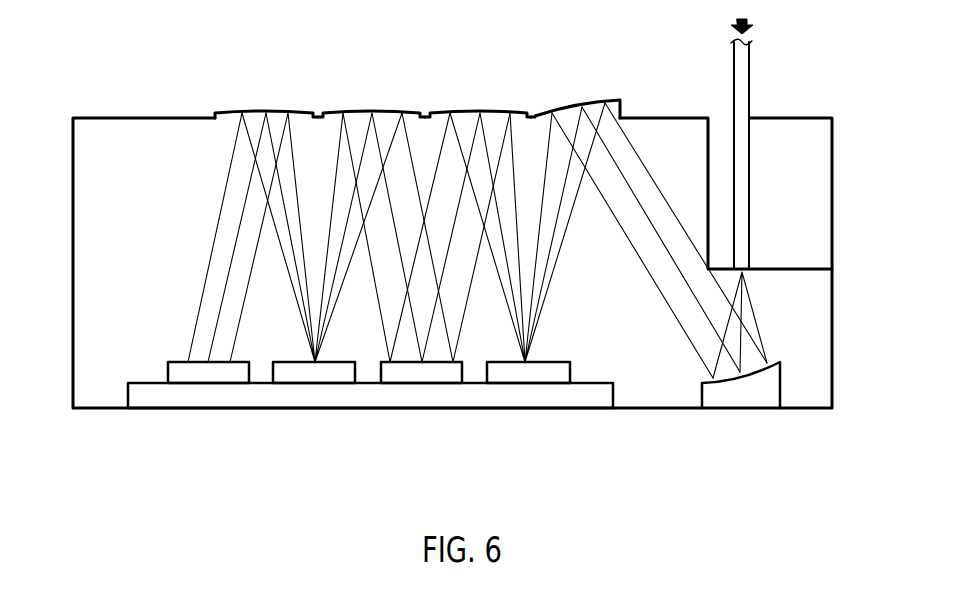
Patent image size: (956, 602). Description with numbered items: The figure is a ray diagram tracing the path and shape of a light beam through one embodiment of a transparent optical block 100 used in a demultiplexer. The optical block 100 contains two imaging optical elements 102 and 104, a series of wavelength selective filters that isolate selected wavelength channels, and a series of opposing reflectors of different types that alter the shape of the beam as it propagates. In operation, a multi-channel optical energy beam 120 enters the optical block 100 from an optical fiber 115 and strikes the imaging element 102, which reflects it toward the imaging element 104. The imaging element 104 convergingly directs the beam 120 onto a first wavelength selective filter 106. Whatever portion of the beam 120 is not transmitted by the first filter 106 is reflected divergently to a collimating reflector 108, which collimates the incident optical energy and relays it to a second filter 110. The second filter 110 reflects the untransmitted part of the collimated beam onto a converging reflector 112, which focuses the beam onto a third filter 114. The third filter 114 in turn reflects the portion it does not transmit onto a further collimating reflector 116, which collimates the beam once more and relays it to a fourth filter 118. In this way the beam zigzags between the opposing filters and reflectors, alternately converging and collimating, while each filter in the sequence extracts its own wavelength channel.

The transparent optical block 100 is at (102, 134).
The imaging optical element 102 is at (743, 397).
The imaging optical element 104 is at (604, 103).
The first wavelength selective filter 106 is at (537, 385).
The collimating reflector 108 is at (480, 112).
The second filter 110 is at (427, 385).
The converging reflector 112 is at (378, 113).
The third filter 114 is at (317, 385).
The optical fiber 115 is at (748, 100).
The collimating reflector 116 is at (261, 110).
The fourth filter 118 is at (212, 385).
The multi-channel optical energy beam 120 is at (752, 317).